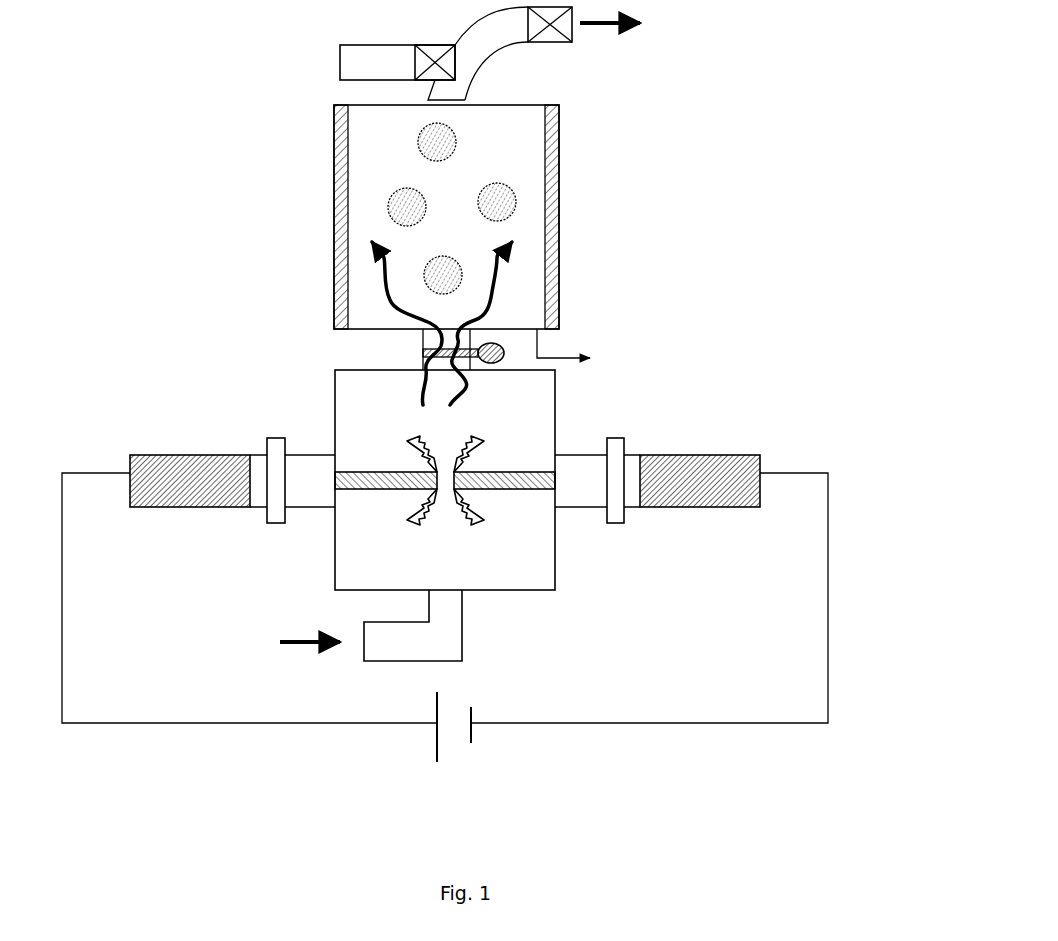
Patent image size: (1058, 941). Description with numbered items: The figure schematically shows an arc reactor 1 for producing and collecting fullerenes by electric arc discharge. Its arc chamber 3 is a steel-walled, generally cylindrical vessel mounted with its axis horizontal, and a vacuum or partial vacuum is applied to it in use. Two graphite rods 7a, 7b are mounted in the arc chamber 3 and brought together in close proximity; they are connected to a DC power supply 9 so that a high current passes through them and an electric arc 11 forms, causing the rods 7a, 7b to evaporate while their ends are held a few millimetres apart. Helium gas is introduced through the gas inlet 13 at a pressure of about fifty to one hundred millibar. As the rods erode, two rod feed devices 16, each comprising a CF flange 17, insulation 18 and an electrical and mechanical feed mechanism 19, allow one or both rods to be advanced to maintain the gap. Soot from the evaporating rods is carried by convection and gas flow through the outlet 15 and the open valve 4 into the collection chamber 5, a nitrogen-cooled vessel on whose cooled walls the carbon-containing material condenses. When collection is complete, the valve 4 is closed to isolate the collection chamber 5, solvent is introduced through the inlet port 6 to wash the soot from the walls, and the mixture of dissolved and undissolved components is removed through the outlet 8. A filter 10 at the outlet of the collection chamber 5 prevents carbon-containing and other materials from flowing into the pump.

The arc reactor 1 is at (186, 198).
The arc chamber 3 is at (331, 391).
The valve 4 is at (500, 355).
The collection chamber 5 is at (523, 157).
The inlet port 6 is at (323, 62).
The graphite rod 7a is at (512, 497).
The graphite rod 7b is at (372, 493).
The outlet 8 is at (575, 349).
The DC power supply 9 is at (454, 743).
The filter 10 is at (448, 105).
The electric arc 11 is at (438, 500).
The gas inlet 13 is at (462, 622).
The outlet 15 is at (423, 352).
The rod feed device 16 is at (161, 424).
The CF flange 17 is at (271, 433).
The insulation 18 is at (635, 513).
The electrical and mechanical feed mechanism 19 is at (199, 488).